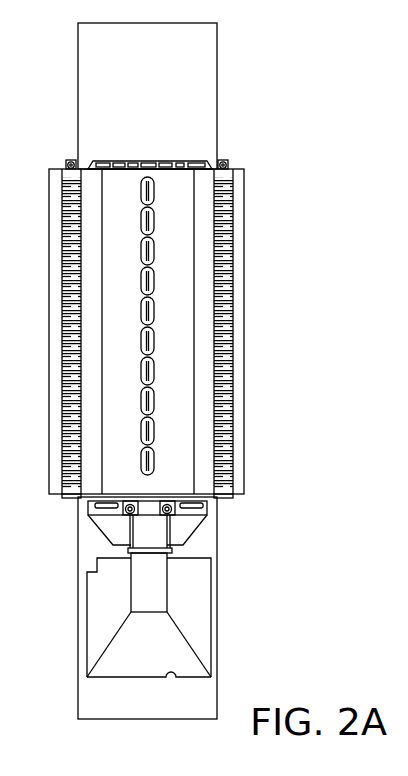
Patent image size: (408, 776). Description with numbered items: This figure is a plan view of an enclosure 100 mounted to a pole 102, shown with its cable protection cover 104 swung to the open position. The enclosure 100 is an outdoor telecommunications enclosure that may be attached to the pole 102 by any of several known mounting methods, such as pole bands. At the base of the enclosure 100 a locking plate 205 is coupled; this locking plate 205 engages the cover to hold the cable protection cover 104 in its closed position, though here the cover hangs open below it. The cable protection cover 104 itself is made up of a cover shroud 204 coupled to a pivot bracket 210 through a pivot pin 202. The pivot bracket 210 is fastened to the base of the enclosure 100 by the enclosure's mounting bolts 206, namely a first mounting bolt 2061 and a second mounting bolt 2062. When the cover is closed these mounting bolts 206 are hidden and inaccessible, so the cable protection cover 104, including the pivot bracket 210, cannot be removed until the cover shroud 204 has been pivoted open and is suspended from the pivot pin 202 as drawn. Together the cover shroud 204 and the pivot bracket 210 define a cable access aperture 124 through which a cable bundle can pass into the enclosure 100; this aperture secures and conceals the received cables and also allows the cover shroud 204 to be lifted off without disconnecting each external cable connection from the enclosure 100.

The enclosure 100 is at (270, 315).
The pole 102 is at (217, 103).
The cable protection cover 104 is at (227, 500).
The cable access aperture 124 is at (130, 597).
The pivot pin 202 is at (136, 556).
The cover shroud 204 is at (112, 678).
The locking plate 205 is at (78, 497).
The mounting bolts 206 is at (144, 477).
The first mounting bolt 2061 is at (131, 504).
The second mounting bolt 2062 is at (161, 503).
The pivot bracket 210 is at (113, 530).